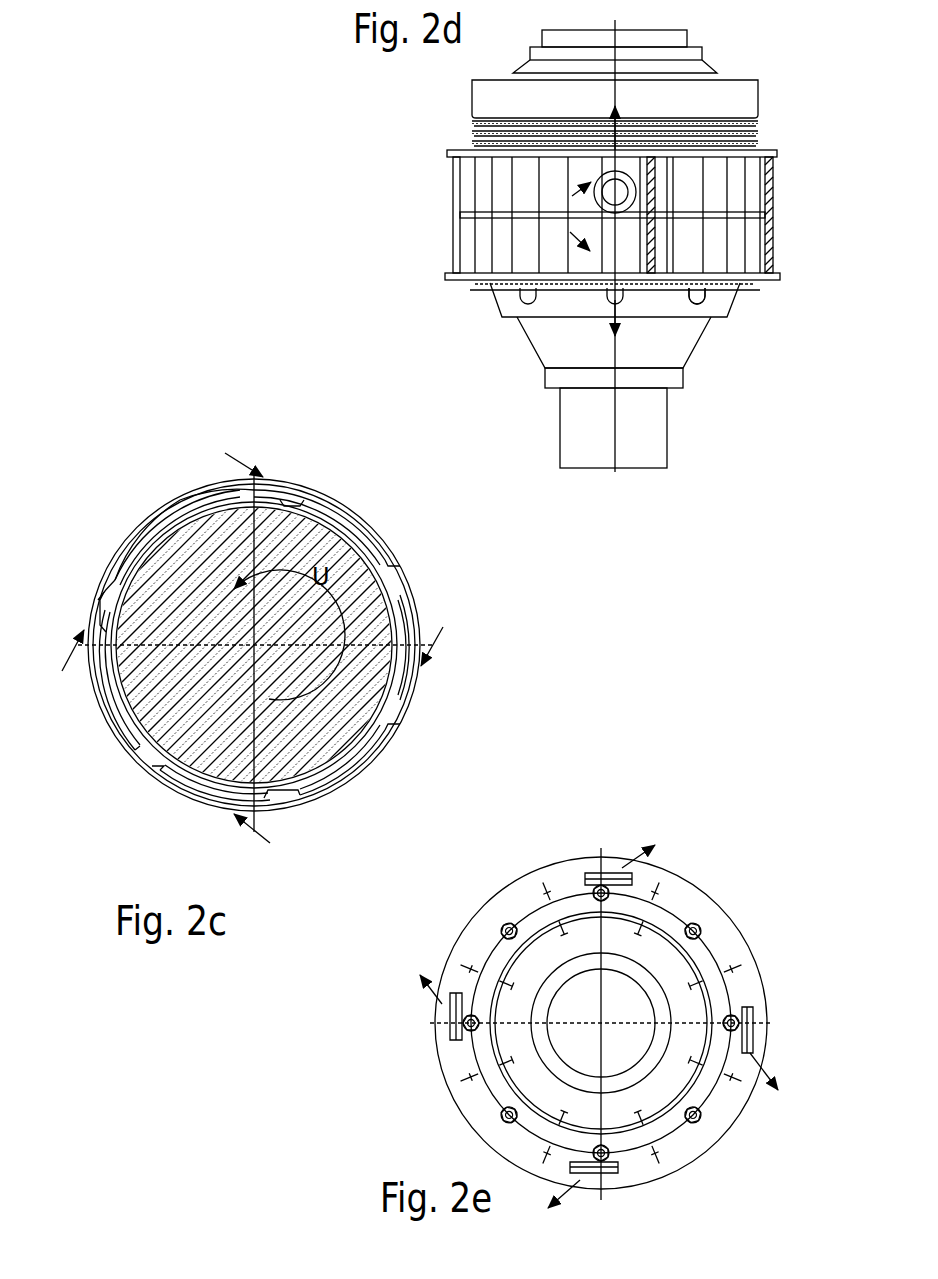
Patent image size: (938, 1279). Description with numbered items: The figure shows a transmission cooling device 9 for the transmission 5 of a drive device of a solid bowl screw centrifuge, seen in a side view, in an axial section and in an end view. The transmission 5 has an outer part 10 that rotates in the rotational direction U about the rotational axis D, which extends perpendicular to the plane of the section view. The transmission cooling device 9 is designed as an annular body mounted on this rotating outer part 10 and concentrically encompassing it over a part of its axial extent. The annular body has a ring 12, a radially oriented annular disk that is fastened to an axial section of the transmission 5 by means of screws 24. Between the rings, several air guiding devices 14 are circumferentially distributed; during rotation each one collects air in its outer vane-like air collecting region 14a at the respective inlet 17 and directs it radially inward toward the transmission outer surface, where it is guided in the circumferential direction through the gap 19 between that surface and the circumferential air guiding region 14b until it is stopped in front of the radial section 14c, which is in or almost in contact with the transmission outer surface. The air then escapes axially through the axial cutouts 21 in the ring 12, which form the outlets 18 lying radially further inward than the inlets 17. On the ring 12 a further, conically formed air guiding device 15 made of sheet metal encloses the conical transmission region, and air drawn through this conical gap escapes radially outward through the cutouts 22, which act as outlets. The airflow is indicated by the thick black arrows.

In FIG. 2c, the transmission 5 is at (382, 540).
In FIG. 2d, the transmission cooling device 9 is at (773, 247).
In FIG. 2e, the transmission cooling device 9 is at (560, 858).
In FIG. 2c, the outer part 10 is at (390, 597).
In FIG. 2e, the ring 12 is at (720, 953).
In FIG. 2d, the air guiding device 14 is at (733, 187).
In FIG. 2c, the air guiding device 14 is at (155, 518).
In FIG. 2c, the air collecting region 14a is at (95, 587).
In FIG. 2c, the circumferential air guiding region 14b is at (130, 537).
In FIG. 2c, the radial section 14c is at (290, 497).
In FIG. 2d, the further air guiding device 15 is at (710, 305).
In FIG. 2c, the inlet 17 is at (92, 607).
In FIG. 2e, the outlet 18 is at (622, 878).
In FIG. 2c, the gap 19 is at (193, 500).
In FIG. 2e, the axial cutout 21 is at (610, 868).
In FIG. 2d, the cutout 22 is at (697, 292).
In FIG. 2e, the screw 24 is at (697, 927).
In FIG. 2c, the rotational axis D is at (254, 645).